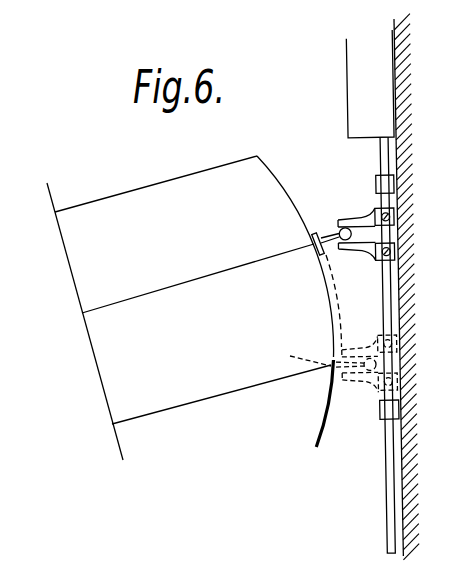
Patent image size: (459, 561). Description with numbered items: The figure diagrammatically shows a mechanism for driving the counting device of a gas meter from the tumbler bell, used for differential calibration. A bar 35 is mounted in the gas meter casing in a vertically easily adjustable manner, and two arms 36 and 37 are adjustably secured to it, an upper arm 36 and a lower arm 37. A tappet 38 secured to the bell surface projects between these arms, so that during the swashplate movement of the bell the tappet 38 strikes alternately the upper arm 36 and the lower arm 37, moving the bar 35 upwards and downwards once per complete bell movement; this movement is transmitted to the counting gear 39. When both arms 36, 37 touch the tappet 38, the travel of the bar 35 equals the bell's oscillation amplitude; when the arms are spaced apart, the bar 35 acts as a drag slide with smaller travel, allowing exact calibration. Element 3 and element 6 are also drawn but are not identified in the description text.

The deflector plate 3 is at (200, 177).
The contact strip 6 is at (332, 366).
The bar 35 is at (379, 147).
The upper arm 36 is at (350, 218).
The lower arm 37 is at (355, 249).
The tappet 38 is at (352, 231).
The counting gear 39 is at (352, 89).